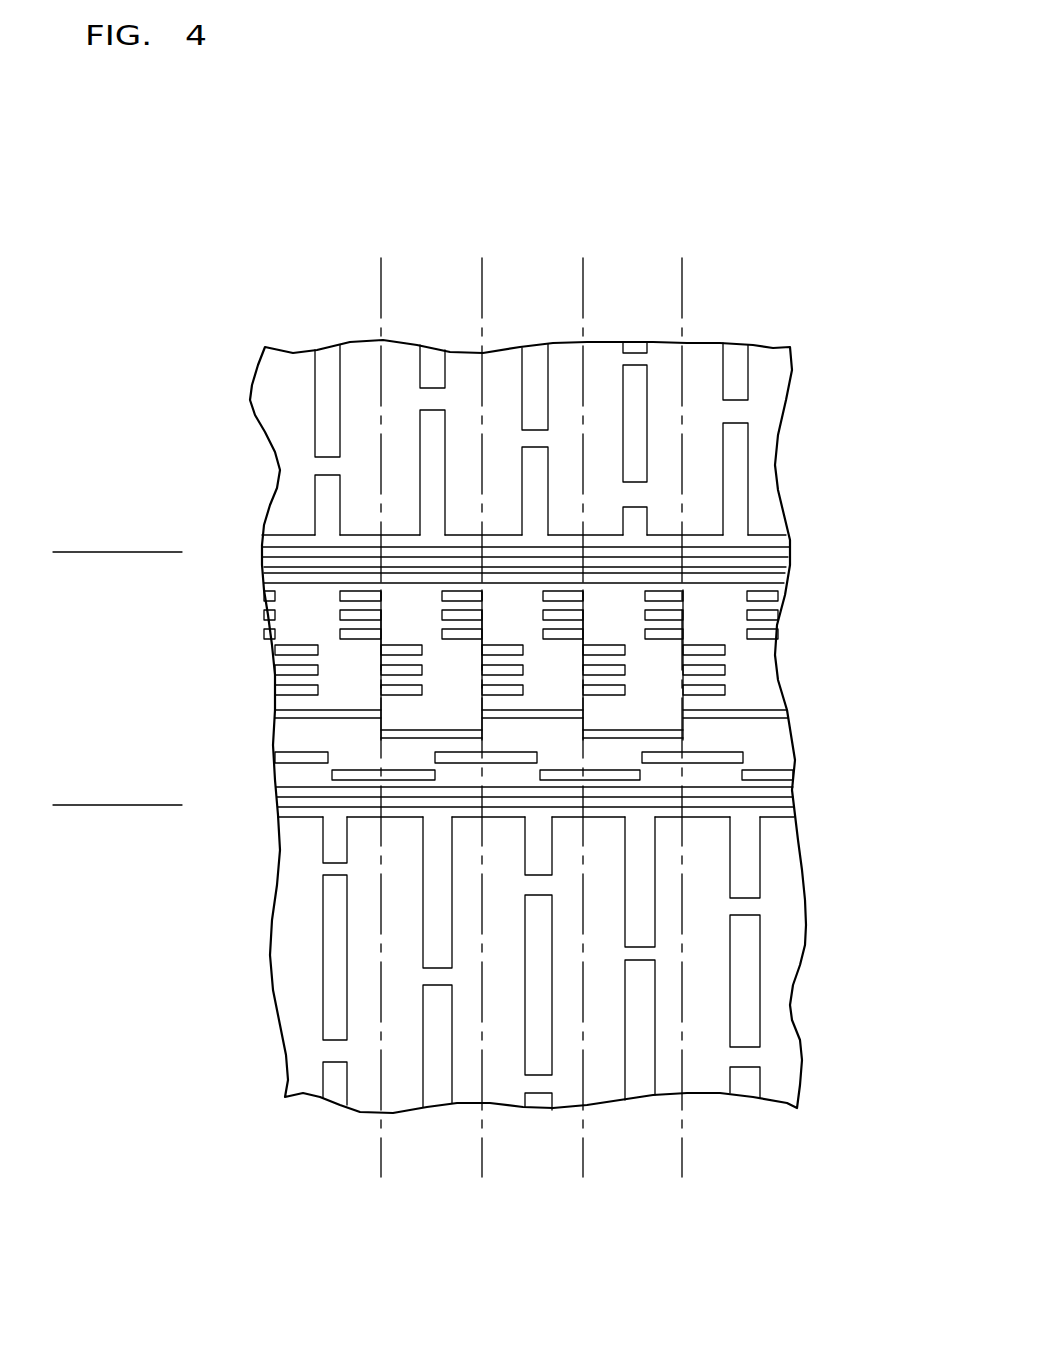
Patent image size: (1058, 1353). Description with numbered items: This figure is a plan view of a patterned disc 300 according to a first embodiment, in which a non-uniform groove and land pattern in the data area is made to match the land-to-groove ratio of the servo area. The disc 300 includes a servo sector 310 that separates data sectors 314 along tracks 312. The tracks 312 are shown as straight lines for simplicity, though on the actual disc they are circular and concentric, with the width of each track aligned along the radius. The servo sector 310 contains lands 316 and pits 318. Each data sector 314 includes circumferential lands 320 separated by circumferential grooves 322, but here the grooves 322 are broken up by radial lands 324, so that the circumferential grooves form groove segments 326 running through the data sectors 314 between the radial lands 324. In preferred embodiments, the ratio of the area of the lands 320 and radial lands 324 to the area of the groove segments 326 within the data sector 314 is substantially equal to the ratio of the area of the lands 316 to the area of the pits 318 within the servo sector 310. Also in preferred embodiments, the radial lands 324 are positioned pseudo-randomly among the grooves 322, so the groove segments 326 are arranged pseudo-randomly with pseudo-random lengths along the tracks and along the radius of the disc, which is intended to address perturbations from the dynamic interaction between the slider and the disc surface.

The disc 300 is at (290, 240).
The servo sector 310 is at (89, 573).
The tracks 312 is at (485, 287).
The data sector 314 is at (88, 536).
The lands 316 is at (772, 750).
The pits 318 is at (778, 708).
The circumferential lands 320 is at (465, 410).
The circumferential grooves 322 is at (738, 493).
The radial lands 324 is at (320, 468).
The groove segments 326 is at (328, 393).